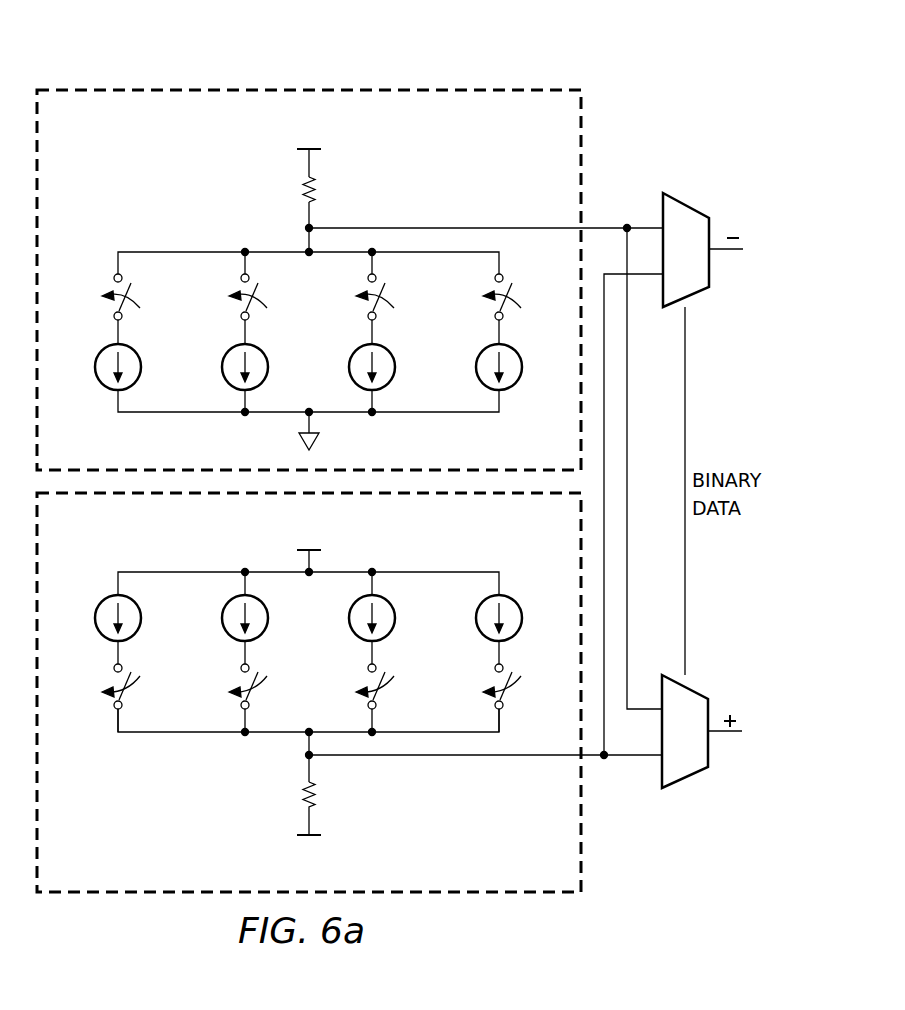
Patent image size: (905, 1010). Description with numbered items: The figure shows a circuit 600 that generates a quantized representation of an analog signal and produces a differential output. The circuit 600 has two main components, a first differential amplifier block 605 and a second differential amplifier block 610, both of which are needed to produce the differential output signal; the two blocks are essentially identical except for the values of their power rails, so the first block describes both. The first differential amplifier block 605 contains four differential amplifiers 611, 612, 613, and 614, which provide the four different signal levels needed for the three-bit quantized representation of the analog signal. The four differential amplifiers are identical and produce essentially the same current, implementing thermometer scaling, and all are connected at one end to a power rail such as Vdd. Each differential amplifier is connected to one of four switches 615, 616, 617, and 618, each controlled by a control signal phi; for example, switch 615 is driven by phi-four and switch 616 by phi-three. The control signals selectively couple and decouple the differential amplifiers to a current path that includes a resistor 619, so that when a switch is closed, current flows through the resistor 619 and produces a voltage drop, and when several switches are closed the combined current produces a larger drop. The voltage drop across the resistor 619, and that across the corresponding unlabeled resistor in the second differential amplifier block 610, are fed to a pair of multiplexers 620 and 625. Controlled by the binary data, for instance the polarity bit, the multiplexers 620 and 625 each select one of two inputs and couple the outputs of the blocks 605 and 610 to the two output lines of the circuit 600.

The circuit 600 is at (181, 66).
The first differential amplifier block 605 is at (138, 826).
The second differential amplifier block 610 is at (138, 165).
The differential amplifier 611 is at (101, 600).
The differential amplifier 612 is at (222, 617).
The differential amplifier 613 is at (349, 617).
The differential amplifier 614 is at (476, 617).
The switch 615 is at (128, 677).
The switch 616 is at (255, 677).
The switch 617 is at (383, 677).
The switch 618 is at (510, 677).
The resistor 619 is at (302, 791).
The multiplexer 620 is at (690, 778).
The multiplexer 625 is at (693, 205).